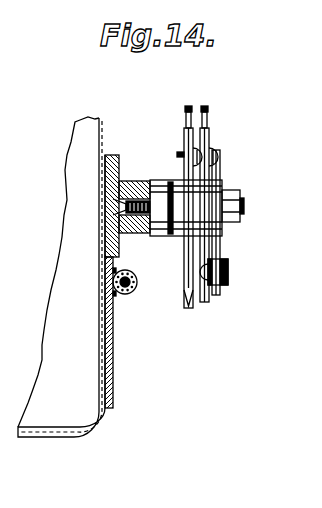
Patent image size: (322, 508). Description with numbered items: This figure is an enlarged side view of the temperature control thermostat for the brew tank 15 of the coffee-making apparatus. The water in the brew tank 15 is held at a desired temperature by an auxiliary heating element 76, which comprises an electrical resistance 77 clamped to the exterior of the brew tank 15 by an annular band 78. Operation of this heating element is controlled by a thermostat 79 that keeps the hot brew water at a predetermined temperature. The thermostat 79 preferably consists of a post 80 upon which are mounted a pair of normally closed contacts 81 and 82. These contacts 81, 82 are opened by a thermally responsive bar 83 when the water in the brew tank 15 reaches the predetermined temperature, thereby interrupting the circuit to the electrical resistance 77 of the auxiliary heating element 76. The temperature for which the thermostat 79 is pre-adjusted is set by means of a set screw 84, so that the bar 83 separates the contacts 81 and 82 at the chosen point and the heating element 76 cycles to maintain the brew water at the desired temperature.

The brew tank 15 is at (92, 427).
The auxiliary heating element 76 is at (130, 300).
The electrical resistance 77 is at (138, 297).
The annular band 78 is at (113, 396).
The thermostat 79 is at (250, 207).
The post 80 is at (135, 181).
The normally closed contact 81 is at (183, 272).
The normally closed contact 82 is at (192, 303).
The thermally responsive bar 83 is at (220, 246).
The set screw 84 is at (228, 281).